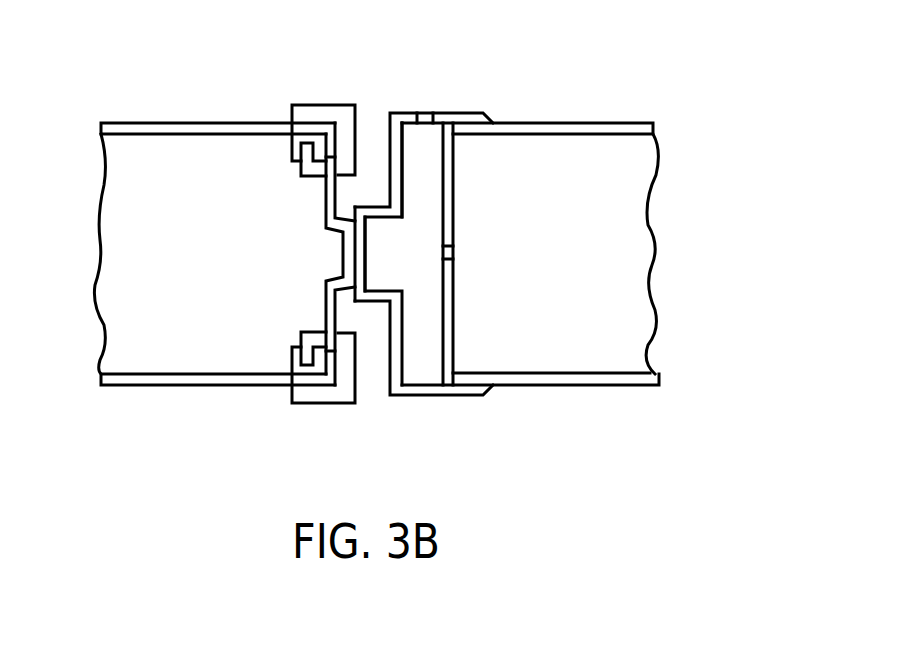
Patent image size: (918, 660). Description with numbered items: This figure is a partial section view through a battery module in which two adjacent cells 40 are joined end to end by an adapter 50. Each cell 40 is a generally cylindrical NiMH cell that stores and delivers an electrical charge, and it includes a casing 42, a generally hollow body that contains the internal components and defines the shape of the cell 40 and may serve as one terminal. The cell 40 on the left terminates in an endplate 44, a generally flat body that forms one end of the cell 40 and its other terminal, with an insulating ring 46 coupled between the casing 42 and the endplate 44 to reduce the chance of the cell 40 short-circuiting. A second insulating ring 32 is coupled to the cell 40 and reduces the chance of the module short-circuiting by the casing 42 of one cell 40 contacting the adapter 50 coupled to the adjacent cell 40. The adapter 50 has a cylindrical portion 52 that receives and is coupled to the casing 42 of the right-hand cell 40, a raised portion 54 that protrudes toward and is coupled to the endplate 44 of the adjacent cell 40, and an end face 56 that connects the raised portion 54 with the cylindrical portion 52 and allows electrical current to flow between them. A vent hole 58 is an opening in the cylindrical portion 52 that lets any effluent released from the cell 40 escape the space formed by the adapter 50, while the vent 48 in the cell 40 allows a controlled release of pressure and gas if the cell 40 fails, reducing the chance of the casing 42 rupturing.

The insulating ring 32 is at (313, 113).
The cell 40 is at (118, 110).
The casing 42 is at (172, 125).
The endplate 44 is at (322, 198).
The insulating ring 46 is at (293, 152).
The vent 48 is at (448, 253).
The adapter 50 is at (457, 432).
The cylindrical portion 52 is at (455, 117).
The raised portion 54 is at (368, 262).
The end face 56 is at (402, 162).
The vent hole 58 is at (425, 118).